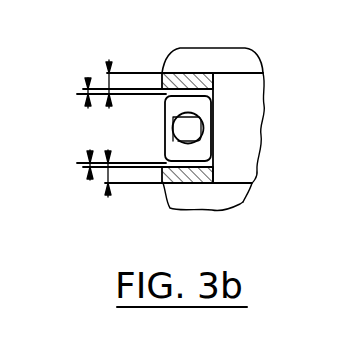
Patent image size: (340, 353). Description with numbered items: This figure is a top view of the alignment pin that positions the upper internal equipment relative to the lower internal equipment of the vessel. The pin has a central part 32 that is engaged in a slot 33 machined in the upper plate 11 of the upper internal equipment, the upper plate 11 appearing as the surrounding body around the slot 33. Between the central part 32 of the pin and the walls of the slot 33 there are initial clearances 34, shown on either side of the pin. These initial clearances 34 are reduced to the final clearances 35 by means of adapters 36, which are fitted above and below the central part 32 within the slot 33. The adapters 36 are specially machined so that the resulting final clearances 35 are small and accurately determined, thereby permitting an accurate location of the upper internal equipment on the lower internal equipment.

The upper plate 11 is at (190, 58).
The central part 32 is at (201, 151).
The slot 33 is at (213, 113).
The initial clearances 34 is at (104, 82).
The final clearances 35 is at (78, 93).
The adapters 36 is at (173, 80).